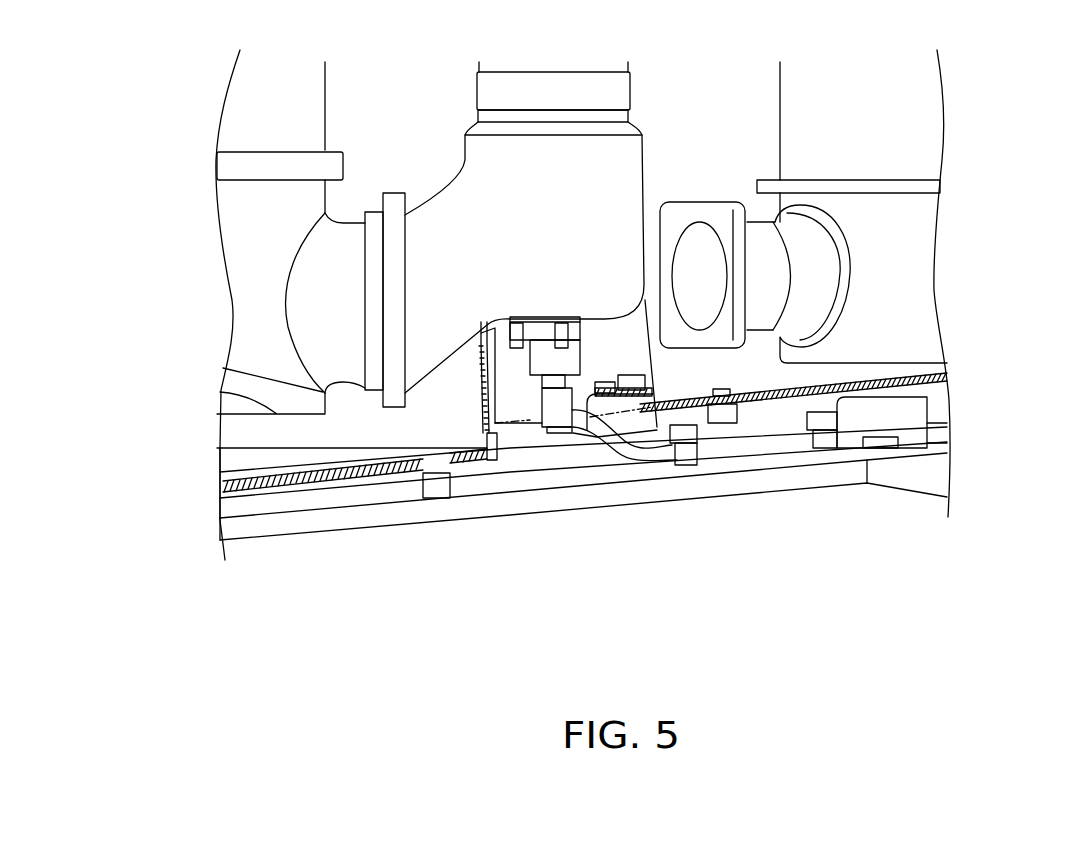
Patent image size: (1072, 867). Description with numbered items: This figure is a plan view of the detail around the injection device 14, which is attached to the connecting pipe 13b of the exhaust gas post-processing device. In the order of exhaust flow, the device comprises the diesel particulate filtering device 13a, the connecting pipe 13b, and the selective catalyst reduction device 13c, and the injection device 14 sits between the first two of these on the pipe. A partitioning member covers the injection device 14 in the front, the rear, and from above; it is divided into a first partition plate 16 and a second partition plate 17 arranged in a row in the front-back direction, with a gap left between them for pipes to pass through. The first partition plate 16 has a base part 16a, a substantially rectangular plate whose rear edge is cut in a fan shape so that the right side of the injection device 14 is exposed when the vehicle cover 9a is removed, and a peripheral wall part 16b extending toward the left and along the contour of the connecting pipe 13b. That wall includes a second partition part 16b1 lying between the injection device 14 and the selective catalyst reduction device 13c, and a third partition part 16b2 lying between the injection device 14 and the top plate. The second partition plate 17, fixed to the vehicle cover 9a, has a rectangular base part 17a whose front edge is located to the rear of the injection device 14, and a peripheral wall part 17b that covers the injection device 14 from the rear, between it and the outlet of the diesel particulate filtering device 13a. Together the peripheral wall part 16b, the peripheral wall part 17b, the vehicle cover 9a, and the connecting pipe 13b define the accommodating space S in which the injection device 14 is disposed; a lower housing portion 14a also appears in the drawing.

The vehicle cover 9a is at (476, 510).
The diesel particulate filtering device 13a is at (243, 120).
The connecting pipe 13b is at (648, 165).
The selective catalyst reduction device 13c is at (933, 122).
The injection device 14 is at (625, 307).
The housing bottom wall 14a is at (653, 462).
The first partition plate 16 is at (752, 390).
The base part 16a is at (830, 382).
The peripheral wall part 16b is at (598, 334).
The second partition part 16b1 is at (657, 367).
The third partition part 16b2 is at (532, 412).
The second partition plate 17 is at (481, 437).
The base part 17a is at (318, 468).
The peripheral wall part 17b is at (487, 405).
The accommodating space S is at (514, 400).